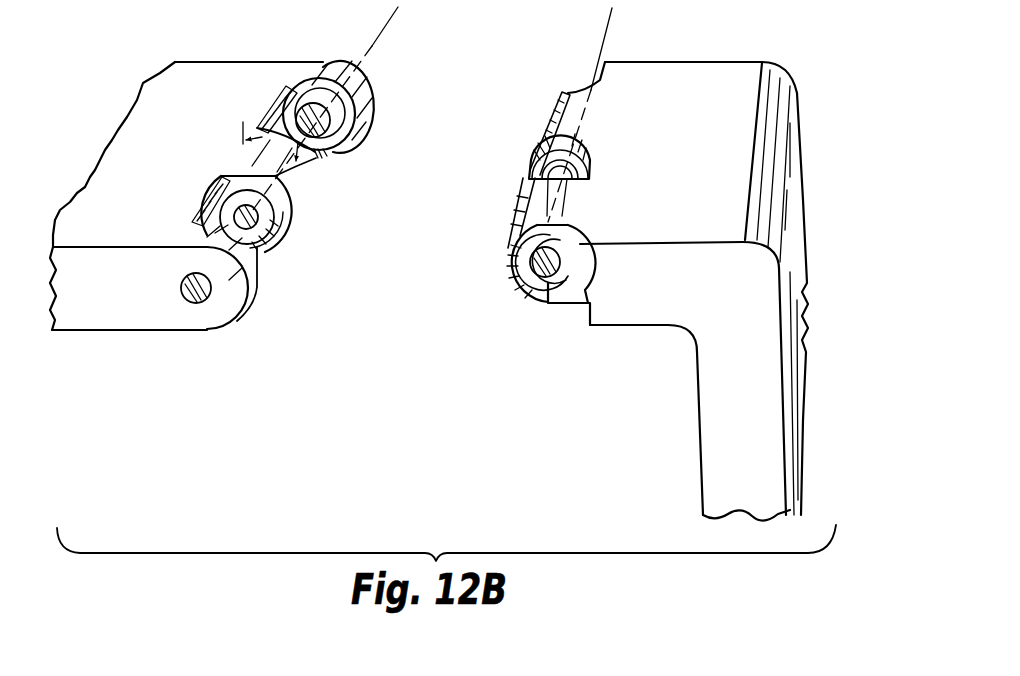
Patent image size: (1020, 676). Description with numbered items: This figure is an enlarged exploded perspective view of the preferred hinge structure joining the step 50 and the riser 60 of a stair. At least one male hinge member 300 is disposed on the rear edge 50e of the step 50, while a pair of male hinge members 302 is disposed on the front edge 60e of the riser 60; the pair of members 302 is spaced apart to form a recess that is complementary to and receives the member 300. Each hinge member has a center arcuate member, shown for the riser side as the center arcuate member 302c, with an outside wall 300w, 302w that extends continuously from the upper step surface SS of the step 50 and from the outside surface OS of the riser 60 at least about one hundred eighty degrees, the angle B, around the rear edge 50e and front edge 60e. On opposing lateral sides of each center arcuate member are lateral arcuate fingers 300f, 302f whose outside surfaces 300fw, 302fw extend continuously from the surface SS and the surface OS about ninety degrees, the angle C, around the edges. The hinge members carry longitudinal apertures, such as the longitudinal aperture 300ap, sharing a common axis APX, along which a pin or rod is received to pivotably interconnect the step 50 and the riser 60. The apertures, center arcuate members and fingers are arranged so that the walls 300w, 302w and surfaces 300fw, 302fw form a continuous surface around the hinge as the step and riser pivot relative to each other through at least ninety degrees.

The step 50 is at (219, 60).
The upper step surface SS is at (194, 80).
The rear edge 50e is at (325, 78).
The male hinge member 300 is at (381, 91).
The lateral arcuate fingers 300f is at (325, 183).
The outside wall 300w is at (258, 170).
The outside surface 300fw is at (262, 176).
The longitudinal aperture 300ap is at (220, 205).
The common axis APX is at (188, 300).
The angle B is at (264, 262).
The riser 60 is at (723, 59).
The outside surface OS is at (686, 95).
The front edge 60e is at (604, 62).
The male hinge members 302 is at (530, 132).
The outside wall 302w is at (555, 110).
The outside surface 302fw is at (553, 130).
The center arcuate member 302c is at (535, 143).
The lateral arcuate fingers 302f is at (528, 170).
The angle C is at (545, 197).